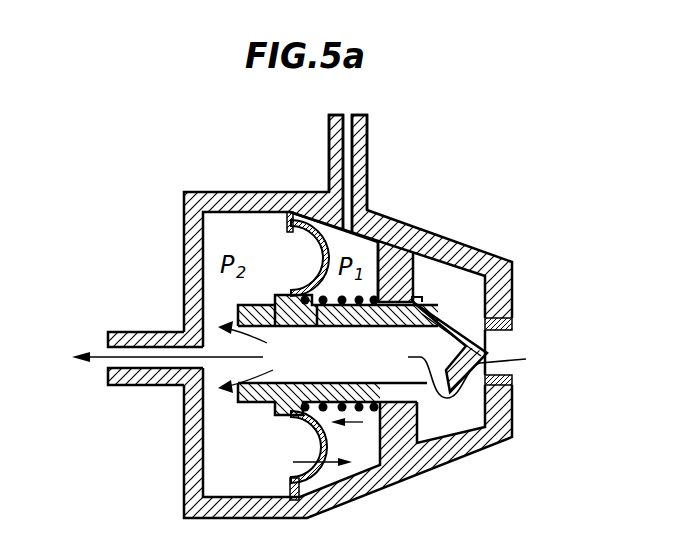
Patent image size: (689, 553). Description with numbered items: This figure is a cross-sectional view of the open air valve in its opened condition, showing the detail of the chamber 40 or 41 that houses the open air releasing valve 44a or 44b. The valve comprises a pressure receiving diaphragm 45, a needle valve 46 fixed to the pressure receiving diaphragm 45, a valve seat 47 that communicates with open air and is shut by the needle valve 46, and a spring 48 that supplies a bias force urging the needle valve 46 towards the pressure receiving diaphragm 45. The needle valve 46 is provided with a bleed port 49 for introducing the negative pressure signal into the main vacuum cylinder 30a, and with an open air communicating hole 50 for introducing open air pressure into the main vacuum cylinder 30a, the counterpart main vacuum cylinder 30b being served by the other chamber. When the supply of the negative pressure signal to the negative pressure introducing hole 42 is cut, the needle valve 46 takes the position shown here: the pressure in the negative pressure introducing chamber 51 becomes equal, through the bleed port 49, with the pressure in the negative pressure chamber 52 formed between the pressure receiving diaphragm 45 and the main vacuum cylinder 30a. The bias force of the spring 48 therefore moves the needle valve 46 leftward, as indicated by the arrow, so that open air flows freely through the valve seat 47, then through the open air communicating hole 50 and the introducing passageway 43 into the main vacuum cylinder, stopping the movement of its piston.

The main vacuum cylinder 30a is at (161, 357).
The main vacuum cylinder 30b is at (347, 120).
The chamber 40 is at (322, 316).
The chamber 41 is at (322, 316).
The negative pressure introducing hole 42 is at (386, 166).
The introducing passageway 43 is at (160, 355).
The open air releasing valve 44a is at (484, 295).
The open air releasing valve 44b is at (445, 310).
The pressure receiving diaphragm 45 is at (317, 258).
The needle valve 46 is at (406, 402).
The valve seat 47 is at (499, 348).
The spring 48 is at (338, 380).
The bleed port 49 is at (310, 327).
The open air communicating hole 50 is at (432, 400).
The negative pressure introducing chamber 51 is at (327, 233).
The negative pressure chamber 52 is at (217, 462).